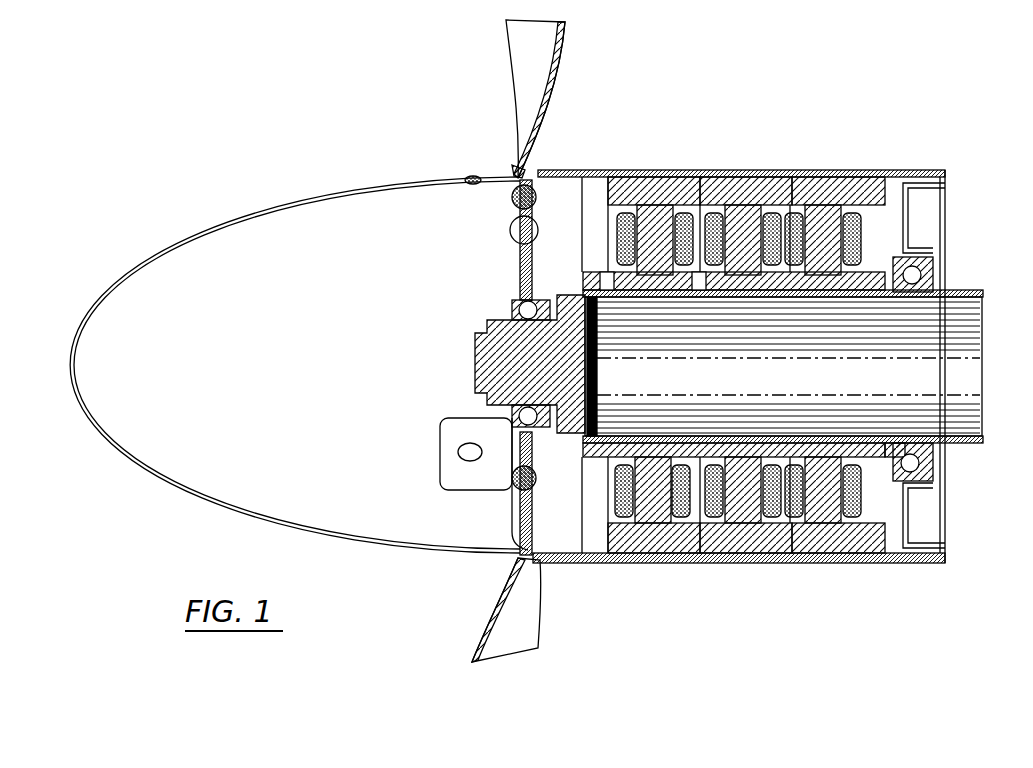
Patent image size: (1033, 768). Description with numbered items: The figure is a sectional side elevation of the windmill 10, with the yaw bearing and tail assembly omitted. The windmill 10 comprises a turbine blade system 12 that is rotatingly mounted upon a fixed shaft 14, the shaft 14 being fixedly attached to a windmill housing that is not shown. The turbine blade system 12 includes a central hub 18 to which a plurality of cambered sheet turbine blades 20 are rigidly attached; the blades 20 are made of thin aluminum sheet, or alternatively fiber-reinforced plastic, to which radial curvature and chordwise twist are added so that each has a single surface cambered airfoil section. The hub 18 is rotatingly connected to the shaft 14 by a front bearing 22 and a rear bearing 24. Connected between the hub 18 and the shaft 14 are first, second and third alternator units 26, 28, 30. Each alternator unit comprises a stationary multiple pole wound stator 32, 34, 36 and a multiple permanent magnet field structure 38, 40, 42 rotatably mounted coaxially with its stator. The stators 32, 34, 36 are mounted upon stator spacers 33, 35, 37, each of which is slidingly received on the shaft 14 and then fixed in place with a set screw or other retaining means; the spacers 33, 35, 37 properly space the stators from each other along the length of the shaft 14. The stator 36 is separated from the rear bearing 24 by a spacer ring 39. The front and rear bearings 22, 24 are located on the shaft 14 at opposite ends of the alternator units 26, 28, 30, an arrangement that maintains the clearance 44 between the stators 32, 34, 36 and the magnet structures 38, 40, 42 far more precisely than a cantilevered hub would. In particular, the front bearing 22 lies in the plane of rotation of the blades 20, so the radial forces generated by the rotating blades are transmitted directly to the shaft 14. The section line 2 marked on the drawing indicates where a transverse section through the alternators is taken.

The section line 2- 2 is at (655, 366).
The windmill 10 is at (745, 100).
The turbine blade system 12 is at (530, 160).
The fixed shaft 14 is at (958, 292).
The central hub 18 is at (520, 275).
The cambered sheet turbine blades 20 is at (568, 40).
The front bearing 22 is at (512, 312).
The rear bearing 24 is at (930, 262).
The first alternator unit 26 is at (676, 195).
The second alternator unit 28 is at (764, 195).
The third alternator unit 30 is at (850, 195).
The stator 32 is at (650, 215).
The stator spacer 33 is at (640, 443).
The stator 34 is at (740, 215).
The stator spacer 35 is at (705, 443).
The stator 36 is at (826, 215).
The stator spacer 37 is at (785, 443).
The permanent magnet field structure 38 is at (660, 553).
The spacer ring 39 is at (865, 443).
The permanent magnet field structure 40 is at (740, 553).
The permanent magnet field structure 42 is at (830, 553).
The clearance 44 is at (630, 218).